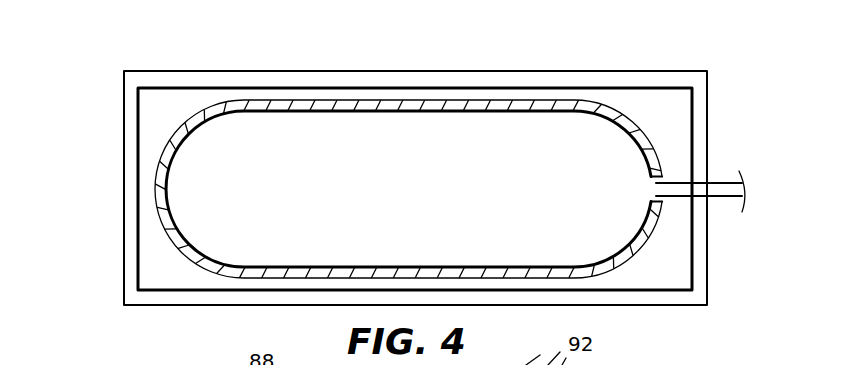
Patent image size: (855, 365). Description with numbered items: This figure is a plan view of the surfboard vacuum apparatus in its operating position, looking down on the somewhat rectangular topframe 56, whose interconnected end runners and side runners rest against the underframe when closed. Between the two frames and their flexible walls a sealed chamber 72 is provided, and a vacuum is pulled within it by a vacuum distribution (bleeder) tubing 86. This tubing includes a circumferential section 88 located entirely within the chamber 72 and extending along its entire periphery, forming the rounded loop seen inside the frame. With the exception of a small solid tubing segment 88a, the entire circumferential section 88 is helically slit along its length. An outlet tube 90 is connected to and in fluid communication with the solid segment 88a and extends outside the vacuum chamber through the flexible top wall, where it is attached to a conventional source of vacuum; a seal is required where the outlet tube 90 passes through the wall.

The topframe 56 is at (126, 179).
The sealed chamber 72 is at (469, 211).
The vacuum distribution (bleeder) tubing 86 is at (408, 144).
The circumferential section 88 is at (418, 110).
The solid tubing segment 88a is at (658, 185).
The outlet tube 90 is at (716, 183).